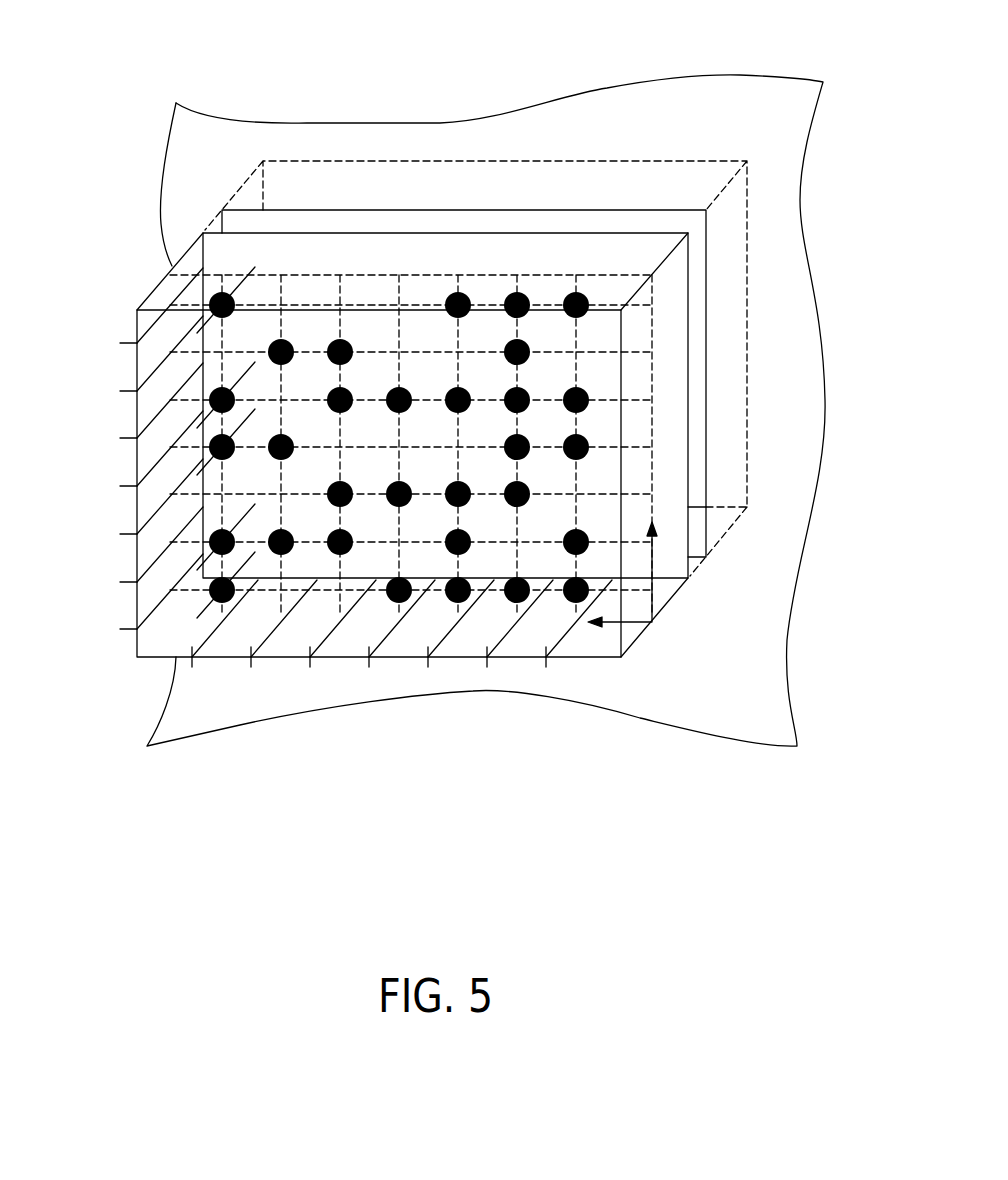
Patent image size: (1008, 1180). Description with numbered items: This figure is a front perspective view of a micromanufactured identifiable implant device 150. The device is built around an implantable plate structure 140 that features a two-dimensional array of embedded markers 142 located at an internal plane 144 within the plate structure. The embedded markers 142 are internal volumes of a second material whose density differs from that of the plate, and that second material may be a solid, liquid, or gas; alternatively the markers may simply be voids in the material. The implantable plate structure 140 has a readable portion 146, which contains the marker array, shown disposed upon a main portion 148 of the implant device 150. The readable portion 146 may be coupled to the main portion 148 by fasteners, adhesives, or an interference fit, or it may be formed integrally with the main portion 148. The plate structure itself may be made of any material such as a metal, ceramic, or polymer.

The implantable plate structure 140 is at (700, 306).
The embedded markers 142 is at (282, 447).
The internal plane 144 is at (652, 607).
The readable portion 146 is at (700, 353).
The main portion 148 is at (747, 560).
The implant device 150 is at (119, 75).